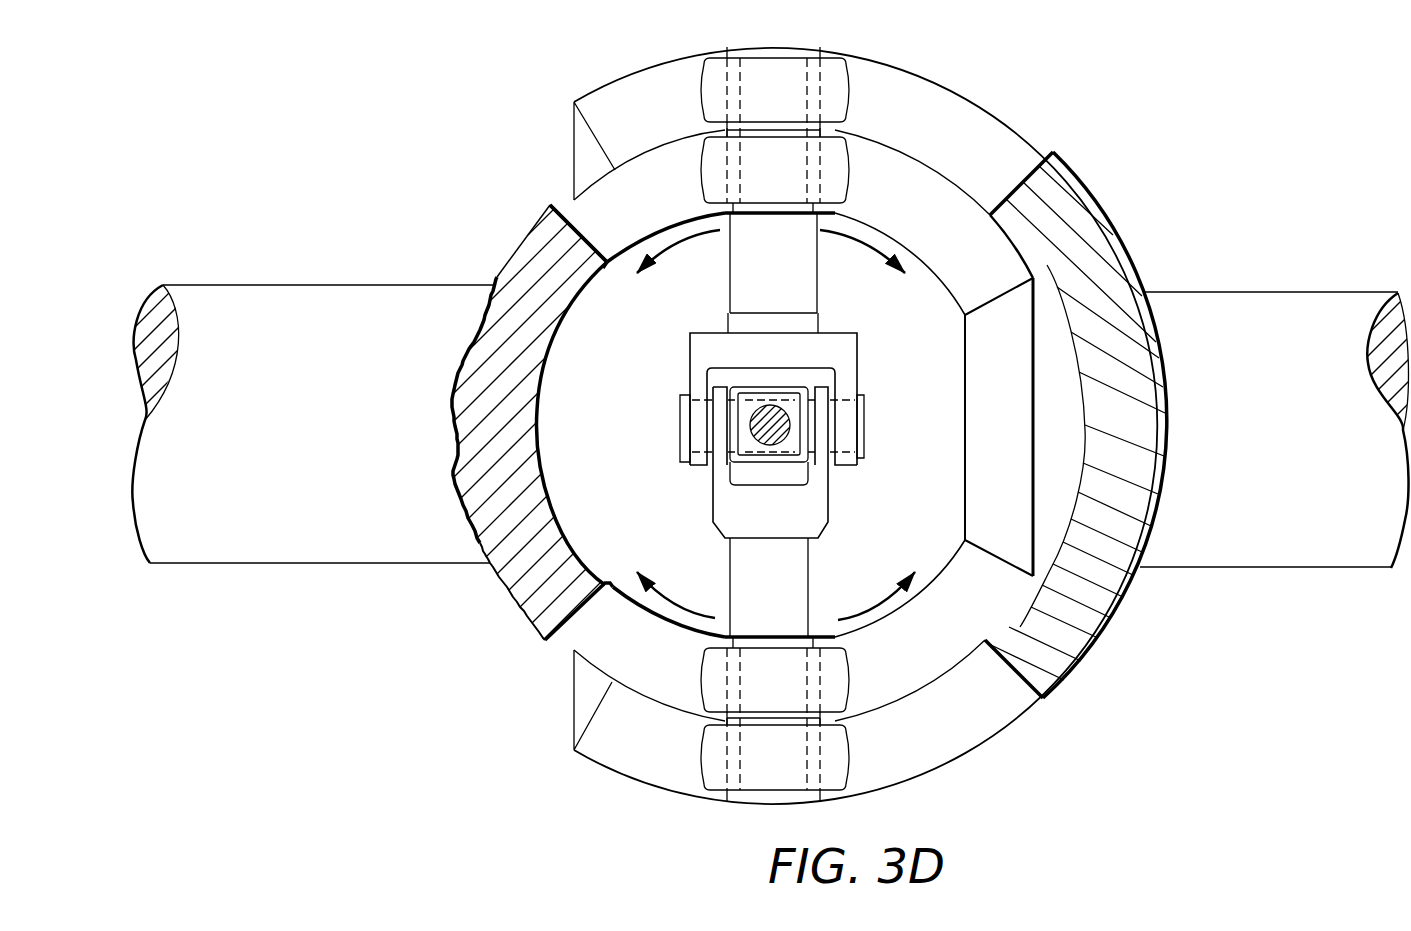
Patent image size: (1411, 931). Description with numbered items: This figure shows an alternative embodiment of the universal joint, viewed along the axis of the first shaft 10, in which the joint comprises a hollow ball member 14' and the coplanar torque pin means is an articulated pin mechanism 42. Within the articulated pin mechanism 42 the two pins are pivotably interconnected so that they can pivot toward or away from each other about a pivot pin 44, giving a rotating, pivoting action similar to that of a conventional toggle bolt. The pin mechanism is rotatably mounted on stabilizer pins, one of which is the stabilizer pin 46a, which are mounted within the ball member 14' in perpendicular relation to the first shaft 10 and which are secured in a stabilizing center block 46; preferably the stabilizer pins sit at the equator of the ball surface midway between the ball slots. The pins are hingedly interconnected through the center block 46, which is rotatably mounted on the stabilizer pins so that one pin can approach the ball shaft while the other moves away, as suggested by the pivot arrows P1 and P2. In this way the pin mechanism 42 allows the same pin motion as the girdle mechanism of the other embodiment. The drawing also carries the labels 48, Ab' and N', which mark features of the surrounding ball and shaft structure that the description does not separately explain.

The first shaft 10 is at (405, 287).
The articulated pin mechanism 42 is at (612, 313).
The pivot pin 44 is at (688, 432).
The stabilizing center block 46 is at (787, 468).
The stabilizer pin 46a is at (768, 427).
The ring segment 48 is at (1011, 343).
The hollow ball member 14' is at (521, 623).
The bearing area Ab' is at (552, 154).
The neutral axis N' is at (1110, 427).
The pivot arrow P1 is at (852, 608).
The pivot arrow P2 is at (856, 256).